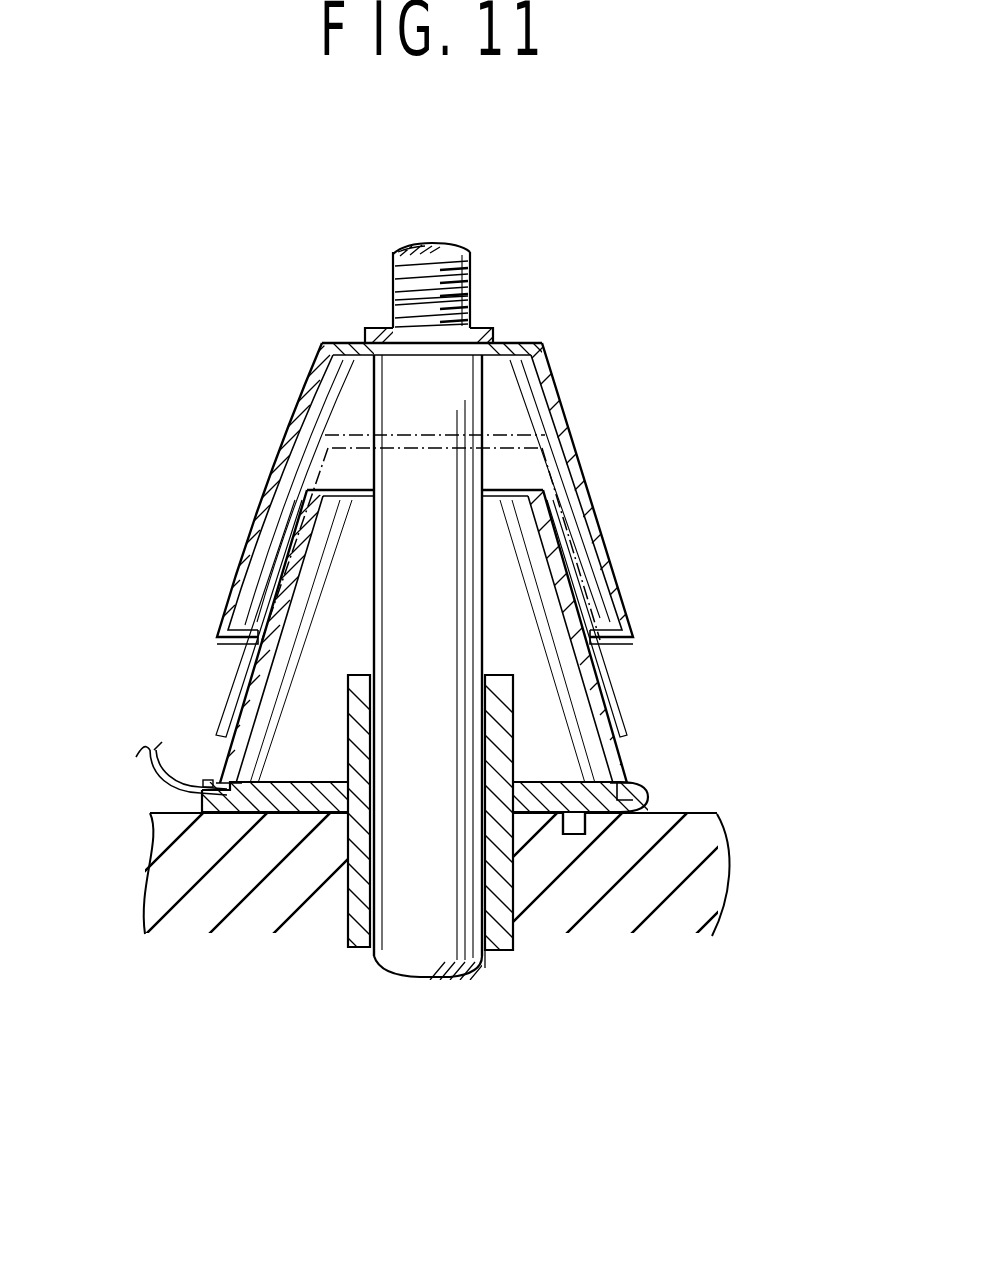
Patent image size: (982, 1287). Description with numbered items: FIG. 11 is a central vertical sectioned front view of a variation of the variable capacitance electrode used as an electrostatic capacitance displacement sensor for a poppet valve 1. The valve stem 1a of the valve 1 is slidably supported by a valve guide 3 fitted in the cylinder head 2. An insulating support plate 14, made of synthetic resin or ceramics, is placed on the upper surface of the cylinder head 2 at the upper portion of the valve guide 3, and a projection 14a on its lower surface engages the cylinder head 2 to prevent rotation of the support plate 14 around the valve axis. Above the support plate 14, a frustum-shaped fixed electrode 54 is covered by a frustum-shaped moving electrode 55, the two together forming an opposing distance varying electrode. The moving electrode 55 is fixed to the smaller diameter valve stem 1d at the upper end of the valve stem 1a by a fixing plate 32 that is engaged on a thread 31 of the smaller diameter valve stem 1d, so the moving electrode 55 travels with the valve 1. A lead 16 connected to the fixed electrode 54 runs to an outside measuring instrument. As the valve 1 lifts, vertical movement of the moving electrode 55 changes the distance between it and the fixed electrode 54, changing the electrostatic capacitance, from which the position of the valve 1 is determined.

The poppet valve 1 is at (345, 987).
The valve stem 1a is at (484, 963).
The smaller diameter valve stem 1d is at (480, 293).
The cylinder head 2 is at (165, 872).
The valve guide 3 is at (505, 902).
The insulating support plate 14 is at (650, 797).
The projection 14a is at (613, 826).
The lead 16 is at (148, 778).
The thread 31 is at (474, 270).
The fixing plate 32 is at (370, 330).
The frustum-shaped fixed electrode 54 is at (250, 722).
The frustum-shaped moving electrode 55 is at (245, 580).